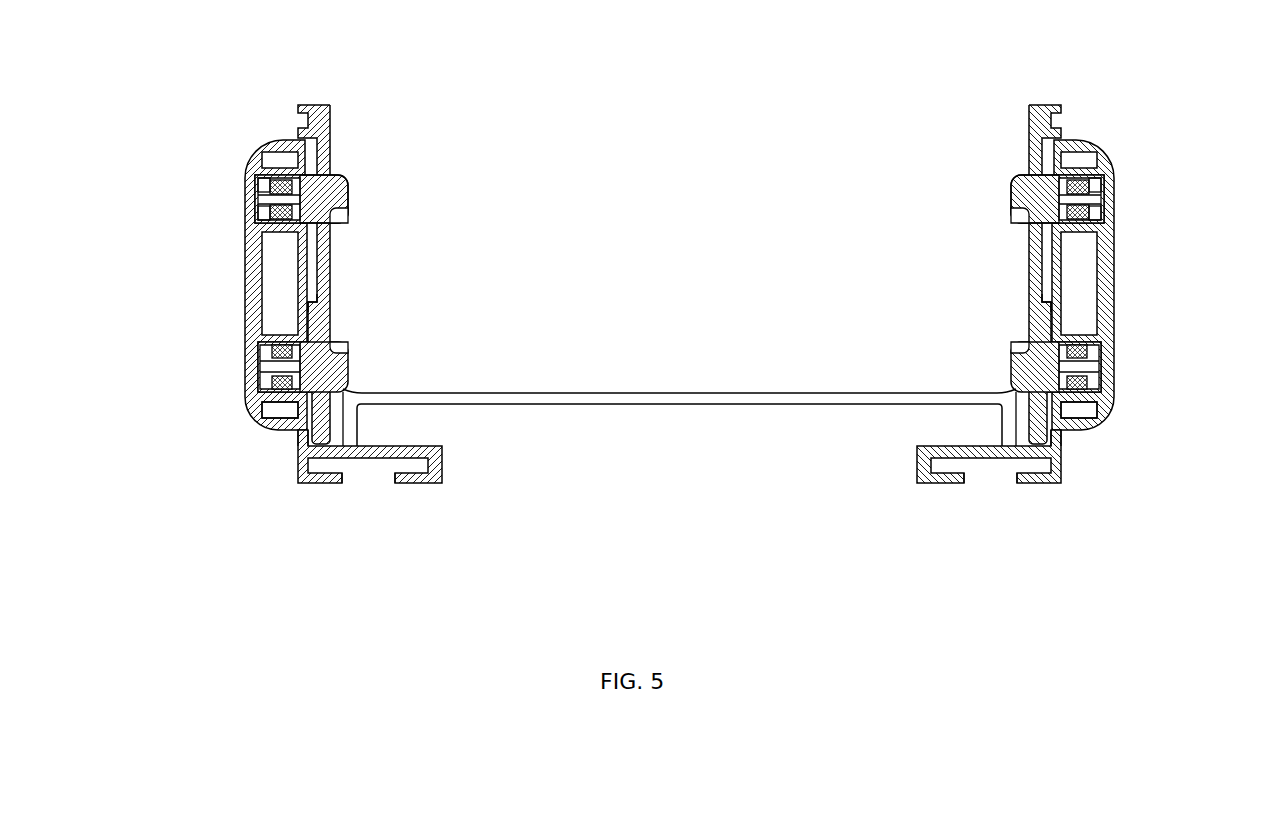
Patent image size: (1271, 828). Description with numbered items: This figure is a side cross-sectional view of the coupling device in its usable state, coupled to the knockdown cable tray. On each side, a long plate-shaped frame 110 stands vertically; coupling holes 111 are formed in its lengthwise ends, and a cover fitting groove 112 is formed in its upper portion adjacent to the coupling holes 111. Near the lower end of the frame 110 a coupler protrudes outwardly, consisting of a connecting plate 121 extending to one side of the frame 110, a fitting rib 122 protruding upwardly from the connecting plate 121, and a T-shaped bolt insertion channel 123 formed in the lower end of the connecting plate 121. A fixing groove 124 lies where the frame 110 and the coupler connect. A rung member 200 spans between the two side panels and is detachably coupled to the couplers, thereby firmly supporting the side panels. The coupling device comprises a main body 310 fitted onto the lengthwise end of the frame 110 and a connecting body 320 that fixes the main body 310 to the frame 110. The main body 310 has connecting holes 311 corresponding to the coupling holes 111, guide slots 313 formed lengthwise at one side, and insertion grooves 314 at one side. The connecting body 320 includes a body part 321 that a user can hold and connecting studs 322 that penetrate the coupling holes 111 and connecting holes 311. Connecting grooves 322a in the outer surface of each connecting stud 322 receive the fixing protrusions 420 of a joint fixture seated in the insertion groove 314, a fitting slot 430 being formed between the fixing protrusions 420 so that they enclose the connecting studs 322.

The frame 110 is at (325, 266).
The coupling holes 111 is at (270, 420).
The cover fitting groove 112 is at (300, 127).
The connecting plate 121 is at (442, 462).
The fitting rib 122 is at (356, 415).
The T-shaped bolt insertion channel 123 is at (366, 476).
The fixing groove 124 is at (298, 445).
The rung member 200 is at (670, 393).
The main body 310 is at (252, 240).
The connecting holes 311 is at (338, 216).
The guide slots 313 is at (318, 302).
The insertion grooves 314 is at (265, 358).
The connecting body 320 is at (451, 113).
The body part 321 is at (345, 192).
The connecting studs 322 is at (330, 180).
The connecting grooves 322a is at (258, 177).
The fixing protrusions 420 is at (258, 203).
The fitting slot 430 is at (258, 186).